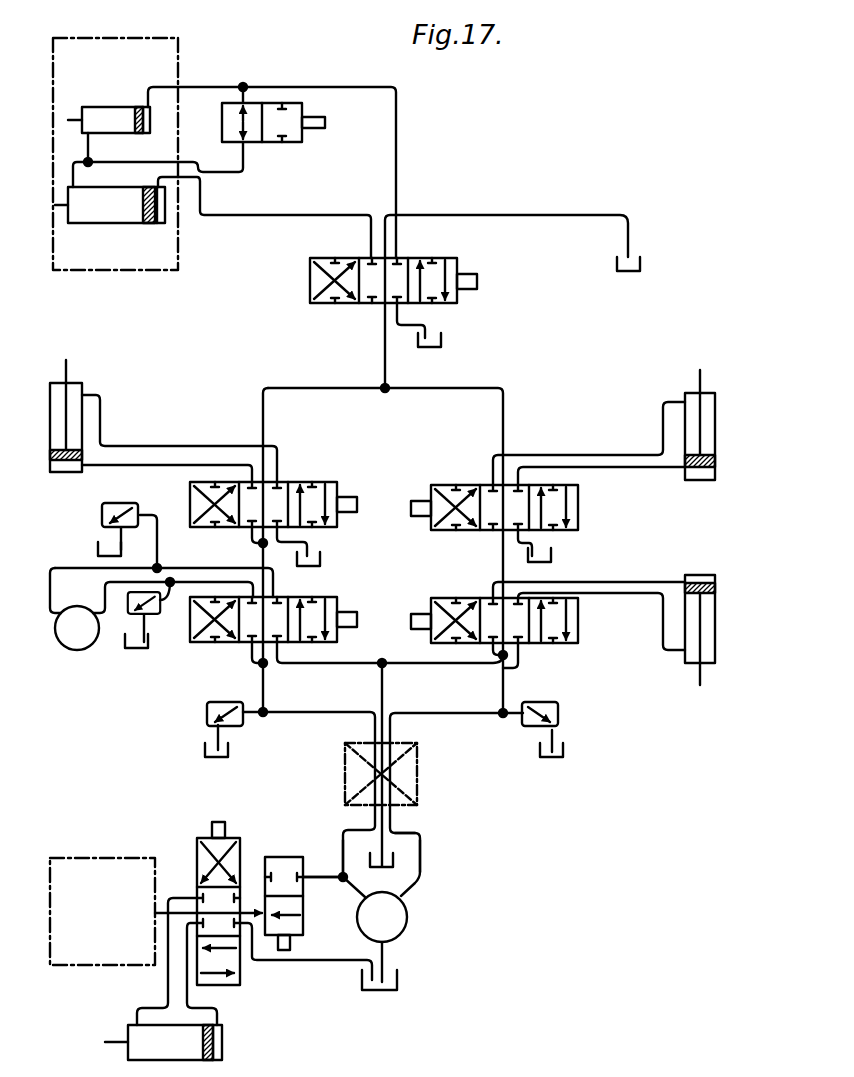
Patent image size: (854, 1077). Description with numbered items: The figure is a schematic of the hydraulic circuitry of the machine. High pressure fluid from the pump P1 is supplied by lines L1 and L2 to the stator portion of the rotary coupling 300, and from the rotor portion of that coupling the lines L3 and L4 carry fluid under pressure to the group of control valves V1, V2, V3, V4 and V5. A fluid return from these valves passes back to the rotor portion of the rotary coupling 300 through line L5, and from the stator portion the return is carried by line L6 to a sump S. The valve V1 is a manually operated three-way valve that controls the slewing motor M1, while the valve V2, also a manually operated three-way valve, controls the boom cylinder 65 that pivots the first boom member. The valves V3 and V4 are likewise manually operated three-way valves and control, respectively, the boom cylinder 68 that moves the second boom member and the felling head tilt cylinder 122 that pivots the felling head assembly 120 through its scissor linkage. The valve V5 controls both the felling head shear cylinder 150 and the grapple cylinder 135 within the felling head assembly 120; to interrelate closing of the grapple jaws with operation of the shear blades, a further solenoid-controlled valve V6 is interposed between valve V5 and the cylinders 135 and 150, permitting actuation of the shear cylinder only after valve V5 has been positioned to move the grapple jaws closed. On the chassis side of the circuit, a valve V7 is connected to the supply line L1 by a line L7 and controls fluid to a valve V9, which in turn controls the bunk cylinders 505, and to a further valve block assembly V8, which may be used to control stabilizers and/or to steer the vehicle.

The felling head assembly 120 is at (183, 50).
The hydraulic cylinder 135 is at (101, 107).
The hydraulic cylinder assembly 150 is at (101, 229).
The valve V6 is at (288, 143).
The valve V5 is at (460, 263).
The sump S is at (616, 263).
The hydraulic cylinder 65 is at (82, 389).
The valve V2 is at (350, 470).
The valve V1 is at (350, 585).
The valve V4 is at (433, 487).
The valve V3 is at (433, 600).
The hydraulic cylinder 122 is at (699, 482).
The hydraulic cylinder 68 is at (690, 575).
The slewing motor M1 is at (77, 650).
The line L5 is at (384, 685).
The line L3 is at (375, 723).
The line L4 is at (390, 733).
The rotary coupling 300 is at (422, 764).
The line L1 is at (331, 843).
The line L6 is at (397, 841).
The line L2 is at (421, 858).
The line L7 is at (330, 878).
The pump P1 is at (400, 931).
The valve V7 is at (278, 856).
The valve V9 is at (205, 838).
The valve block assembly V8 is at (125, 854).
The bunk cylinders 505 is at (222, 1038).